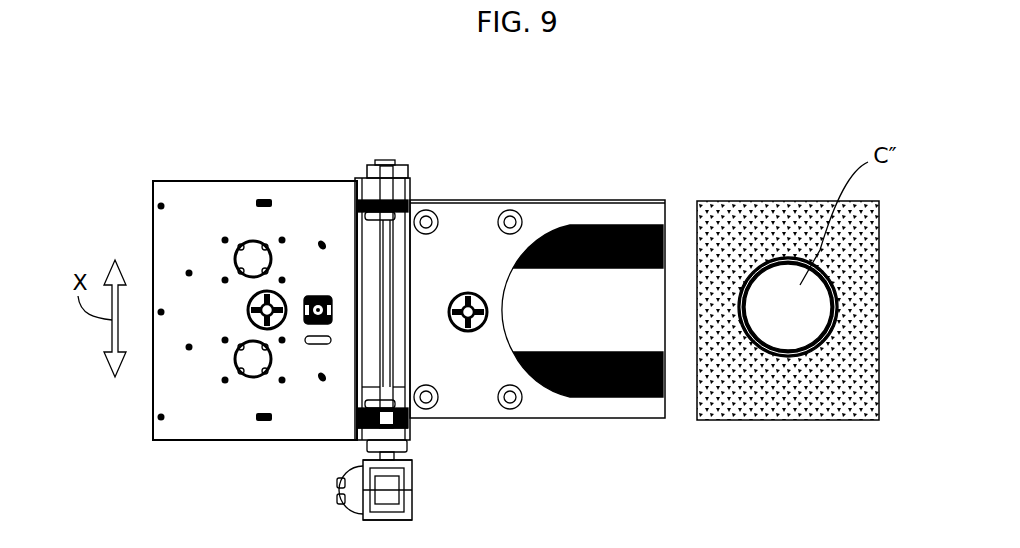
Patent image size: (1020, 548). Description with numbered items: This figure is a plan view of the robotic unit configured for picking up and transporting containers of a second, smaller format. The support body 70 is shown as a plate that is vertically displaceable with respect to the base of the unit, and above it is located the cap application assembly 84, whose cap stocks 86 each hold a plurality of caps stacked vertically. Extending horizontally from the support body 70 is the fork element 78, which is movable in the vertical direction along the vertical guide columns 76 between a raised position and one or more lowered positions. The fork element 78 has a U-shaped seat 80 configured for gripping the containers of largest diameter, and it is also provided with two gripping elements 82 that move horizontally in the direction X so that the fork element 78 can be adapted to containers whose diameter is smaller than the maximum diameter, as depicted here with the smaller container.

The support body 70 is at (293, 176).
The cap application assembly 84 is at (199, 246).
The cap stocks 86 is at (238, 278).
The vertical guide columns 76 is at (426, 210).
The fork element 78 is at (603, 194).
The U-shaped seat 80 is at (503, 314).
The gripping elements 82 is at (619, 270).